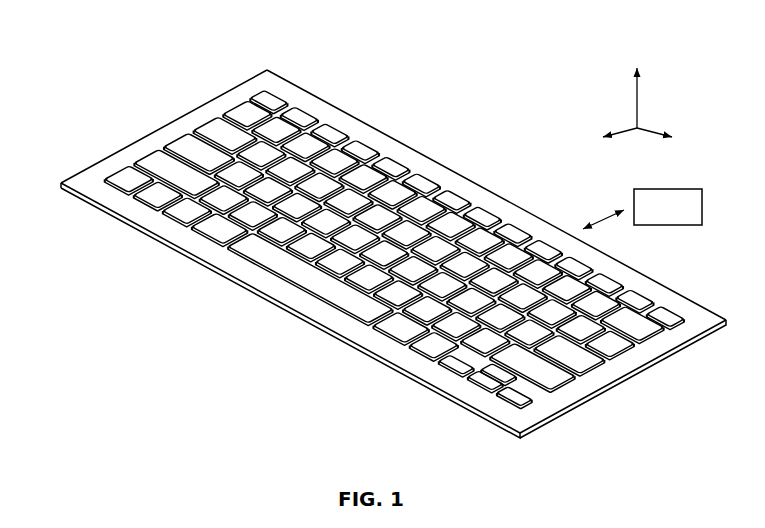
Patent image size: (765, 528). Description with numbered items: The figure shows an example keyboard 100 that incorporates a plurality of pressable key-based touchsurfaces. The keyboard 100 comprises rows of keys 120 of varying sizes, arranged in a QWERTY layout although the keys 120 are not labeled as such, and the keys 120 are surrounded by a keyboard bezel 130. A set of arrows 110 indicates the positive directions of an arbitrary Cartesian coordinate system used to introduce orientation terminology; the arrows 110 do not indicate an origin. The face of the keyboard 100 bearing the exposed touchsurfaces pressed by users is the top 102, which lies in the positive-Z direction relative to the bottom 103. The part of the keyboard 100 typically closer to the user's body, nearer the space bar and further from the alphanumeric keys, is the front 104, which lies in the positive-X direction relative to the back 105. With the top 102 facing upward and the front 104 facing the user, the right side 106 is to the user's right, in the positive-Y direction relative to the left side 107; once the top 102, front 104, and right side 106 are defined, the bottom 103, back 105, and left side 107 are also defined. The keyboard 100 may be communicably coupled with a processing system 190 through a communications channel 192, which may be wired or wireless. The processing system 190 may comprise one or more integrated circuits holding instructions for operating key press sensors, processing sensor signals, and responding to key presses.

The keyboard 100 is at (364, 72).
The top 102 is at (665, 317).
The bottom 103 is at (690, 358).
The front 104 is at (246, 300).
The back 105 is at (458, 166).
The right side 106 is at (609, 404).
The left side 107 is at (71, 166).
The arrows 110 is at (576, 106).
The keys 120 is at (230, 73).
The keyboard bezel 130 is at (193, 244).
The processing system 190 is at (694, 189).
The communications channel 192 is at (603, 218).